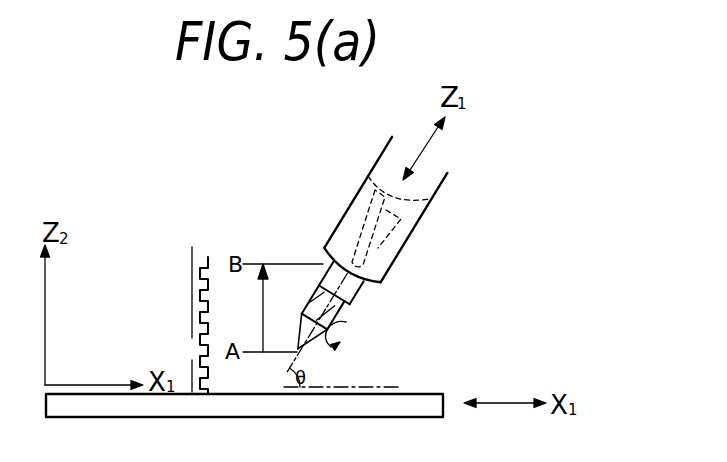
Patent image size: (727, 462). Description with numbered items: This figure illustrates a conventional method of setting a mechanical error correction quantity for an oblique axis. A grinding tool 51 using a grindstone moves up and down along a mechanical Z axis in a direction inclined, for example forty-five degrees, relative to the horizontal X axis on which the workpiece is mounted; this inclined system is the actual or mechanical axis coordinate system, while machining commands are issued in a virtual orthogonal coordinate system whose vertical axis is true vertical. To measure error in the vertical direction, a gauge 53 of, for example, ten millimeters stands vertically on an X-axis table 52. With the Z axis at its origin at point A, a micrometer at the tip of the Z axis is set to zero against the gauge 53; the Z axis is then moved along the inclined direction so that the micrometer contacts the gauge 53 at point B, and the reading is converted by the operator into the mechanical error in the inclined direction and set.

The tool head 51 is at (336, 313).
The X-axis table 52 is at (397, 410).
The gauge 53 is at (200, 252).